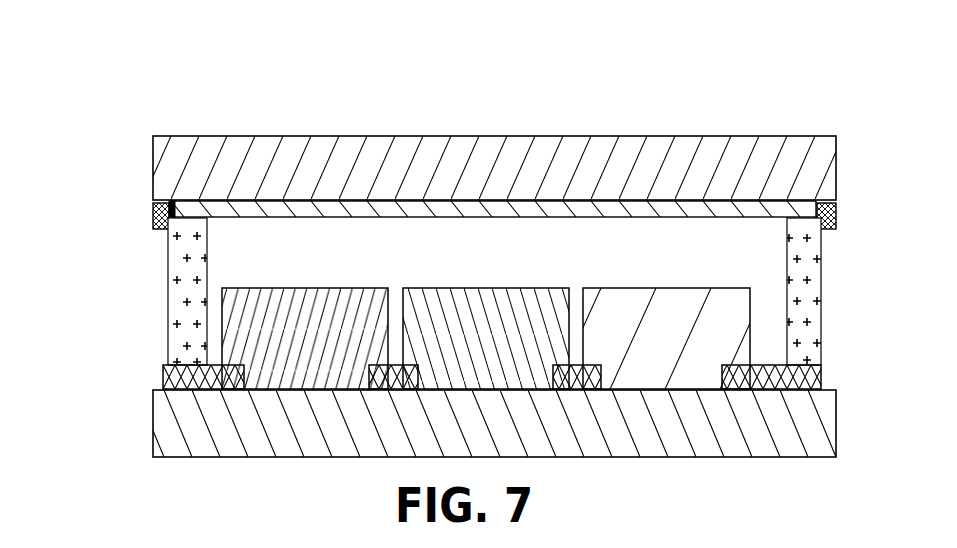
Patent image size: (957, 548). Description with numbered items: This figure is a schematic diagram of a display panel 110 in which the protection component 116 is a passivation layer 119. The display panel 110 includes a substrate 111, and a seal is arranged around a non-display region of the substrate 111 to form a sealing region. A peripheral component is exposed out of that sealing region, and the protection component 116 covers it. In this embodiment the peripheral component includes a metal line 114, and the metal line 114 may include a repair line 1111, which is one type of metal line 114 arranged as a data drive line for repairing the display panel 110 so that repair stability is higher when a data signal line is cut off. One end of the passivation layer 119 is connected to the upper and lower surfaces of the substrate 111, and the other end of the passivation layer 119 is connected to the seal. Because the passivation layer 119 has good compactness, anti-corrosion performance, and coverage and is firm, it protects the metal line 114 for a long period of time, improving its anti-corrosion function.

The display panel 110 is at (403, 118).
The substrate 111 is at (822, 154).
The metal line 114 is at (209, 210).
The repair line 1111 is at (492, 209).
The protection component 116 is at (156, 227).
The passivation layer 119 is at (826, 216).